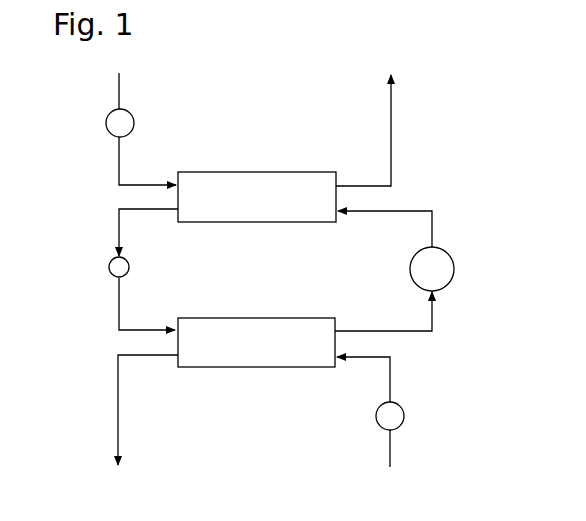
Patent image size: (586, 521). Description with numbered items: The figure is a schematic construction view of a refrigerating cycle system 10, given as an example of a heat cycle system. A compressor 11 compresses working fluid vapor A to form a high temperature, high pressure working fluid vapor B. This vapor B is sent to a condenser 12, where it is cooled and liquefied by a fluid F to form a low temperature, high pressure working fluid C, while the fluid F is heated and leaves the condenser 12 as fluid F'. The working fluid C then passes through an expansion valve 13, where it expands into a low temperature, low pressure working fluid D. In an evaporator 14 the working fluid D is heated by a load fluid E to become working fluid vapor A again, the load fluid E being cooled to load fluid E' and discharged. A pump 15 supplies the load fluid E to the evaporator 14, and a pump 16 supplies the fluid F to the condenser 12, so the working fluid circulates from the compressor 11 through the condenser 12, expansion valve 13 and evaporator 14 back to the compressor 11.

The refrigerating cycle system 10 is at (238, 113).
The compressor 11 is at (455, 270).
The condenser 12 is at (275, 172).
The expansion valve 13 is at (109, 266).
The evaporator 14 is at (273, 318).
The pump 15 is at (405, 420).
The pump 16 is at (106, 122).